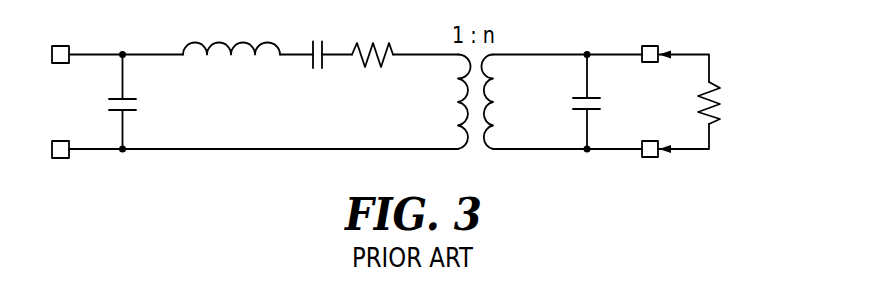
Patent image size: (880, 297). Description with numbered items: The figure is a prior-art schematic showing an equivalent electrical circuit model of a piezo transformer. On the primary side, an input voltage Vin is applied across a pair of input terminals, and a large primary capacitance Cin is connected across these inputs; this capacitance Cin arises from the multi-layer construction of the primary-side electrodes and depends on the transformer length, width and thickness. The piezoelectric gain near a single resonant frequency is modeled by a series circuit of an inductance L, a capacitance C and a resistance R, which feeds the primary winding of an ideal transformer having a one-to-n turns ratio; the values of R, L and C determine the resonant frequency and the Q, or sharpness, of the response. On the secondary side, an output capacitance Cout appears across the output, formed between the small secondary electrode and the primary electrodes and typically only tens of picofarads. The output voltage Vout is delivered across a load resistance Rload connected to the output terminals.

The input voltage Vin is at (50, 102).
The primary capacitance Cin is at (143, 102).
The series inductance L is at (231, 35).
The series capacitance C is at (316, 40).
The series resistance R is at (372, 40).
The output capacitance Cout is at (561, 102).
The output voltage Vout is at (651, 101).
The load resistance Rload is at (742, 104).